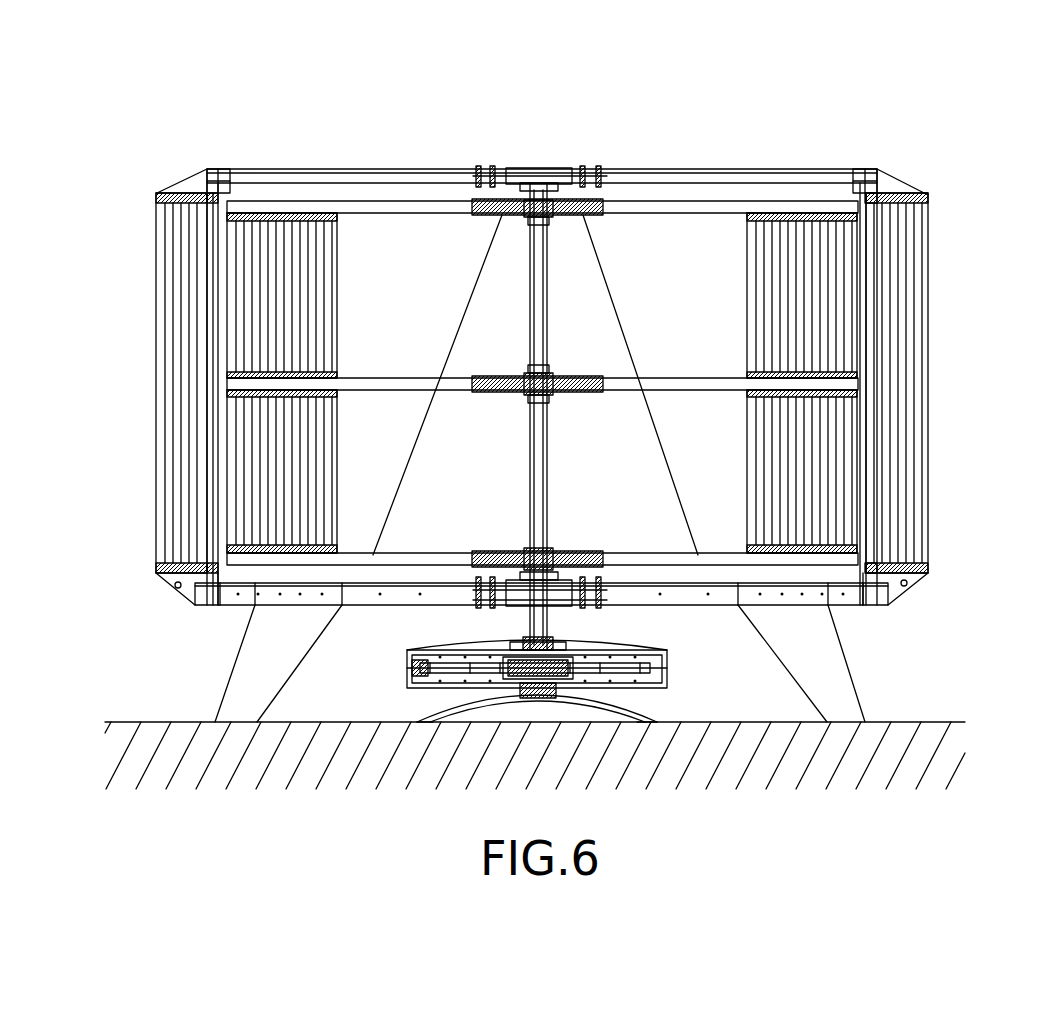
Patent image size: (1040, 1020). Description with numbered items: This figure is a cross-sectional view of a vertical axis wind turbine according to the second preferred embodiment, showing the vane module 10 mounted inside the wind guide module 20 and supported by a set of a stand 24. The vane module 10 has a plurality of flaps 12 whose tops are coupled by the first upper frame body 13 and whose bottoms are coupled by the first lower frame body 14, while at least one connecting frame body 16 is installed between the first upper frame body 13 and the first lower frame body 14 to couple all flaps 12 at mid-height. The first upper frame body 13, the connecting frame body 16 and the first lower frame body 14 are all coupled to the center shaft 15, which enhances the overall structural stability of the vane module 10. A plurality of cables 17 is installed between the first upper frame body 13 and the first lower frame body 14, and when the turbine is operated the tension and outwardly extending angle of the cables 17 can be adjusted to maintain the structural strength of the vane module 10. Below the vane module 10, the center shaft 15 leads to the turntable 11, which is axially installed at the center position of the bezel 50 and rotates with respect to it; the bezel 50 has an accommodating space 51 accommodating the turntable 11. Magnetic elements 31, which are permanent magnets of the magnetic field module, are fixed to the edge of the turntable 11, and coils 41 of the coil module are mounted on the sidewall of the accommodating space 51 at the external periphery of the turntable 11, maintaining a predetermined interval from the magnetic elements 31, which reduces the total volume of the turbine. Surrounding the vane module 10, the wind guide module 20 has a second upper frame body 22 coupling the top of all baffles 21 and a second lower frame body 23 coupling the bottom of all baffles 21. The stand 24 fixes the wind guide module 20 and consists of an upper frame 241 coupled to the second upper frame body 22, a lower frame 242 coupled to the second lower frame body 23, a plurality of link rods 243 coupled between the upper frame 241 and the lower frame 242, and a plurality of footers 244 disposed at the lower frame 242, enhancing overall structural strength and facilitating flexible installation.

The vane module 10 is at (760, 172).
The turntable 11 is at (598, 667).
The flap 12 is at (318, 306).
The first upper frame body 13 is at (663, 210).
The first lower frame body 14 is at (622, 553).
The center shaft 15 is at (545, 310).
The connecting frame body 16 is at (690, 382).
The cable 17 is at (635, 330).
The wind guide module 20 is at (940, 392).
The baffle 21 is at (170, 320).
The second upper frame body 22 is at (928, 195).
The second lower frame body 23 is at (930, 556).
The stand 24 is at (254, 138).
The upper frame 241 is at (387, 177).
The lower frame 242 is at (226, 595).
The link rod 243 is at (213, 228).
The footer 244 is at (249, 668).
The magnetic element 31 is at (428, 663).
The coil 41 is at (418, 662).
The bezel 50 is at (650, 647).
The accommodating space 51 is at (648, 675).